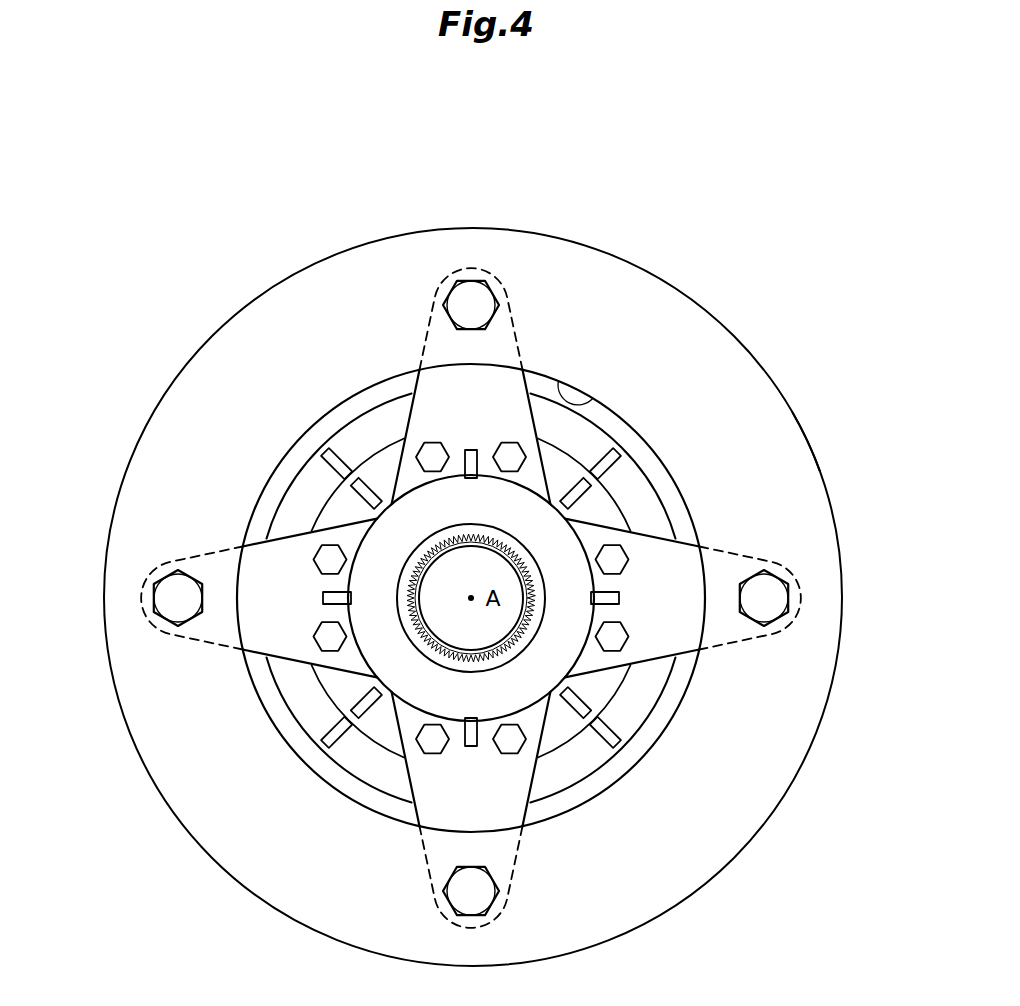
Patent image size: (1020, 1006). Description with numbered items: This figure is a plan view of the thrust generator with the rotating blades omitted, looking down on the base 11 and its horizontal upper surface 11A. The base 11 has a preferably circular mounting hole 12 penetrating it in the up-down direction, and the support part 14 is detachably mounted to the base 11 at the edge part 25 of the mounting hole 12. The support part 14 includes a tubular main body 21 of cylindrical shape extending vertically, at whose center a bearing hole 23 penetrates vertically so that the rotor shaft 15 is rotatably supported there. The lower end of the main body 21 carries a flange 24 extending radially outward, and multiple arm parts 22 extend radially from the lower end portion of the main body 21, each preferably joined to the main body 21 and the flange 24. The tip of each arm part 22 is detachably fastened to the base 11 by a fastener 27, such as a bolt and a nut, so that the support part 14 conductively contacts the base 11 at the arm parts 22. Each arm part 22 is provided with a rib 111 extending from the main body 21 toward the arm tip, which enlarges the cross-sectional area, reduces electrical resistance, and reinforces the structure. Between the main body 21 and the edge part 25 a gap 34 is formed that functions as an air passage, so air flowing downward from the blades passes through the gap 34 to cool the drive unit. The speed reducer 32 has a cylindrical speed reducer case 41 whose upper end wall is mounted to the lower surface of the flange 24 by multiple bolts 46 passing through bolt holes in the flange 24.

The base 11 is at (741, 350).
The upper surface 11A is at (779, 418).
The mounting hole 12 is at (562, 382).
The support part 14 is at (418, 775).
The rotor shaft 15 is at (498, 632).
The main body 21 is at (567, 546).
The arm parts 22 is at (213, 620).
The bearing hole 23 is at (541, 599).
The flange 24 is at (536, 594).
The edge part 25 is at (636, 410).
The fastener 27 is at (174, 587).
The speed reducer 32 is at (342, 775).
The gap 34 is at (278, 487).
The speed reducer case 41 is at (312, 720).
The bolts 46 is at (432, 452).
The rib 111 is at (375, 482).